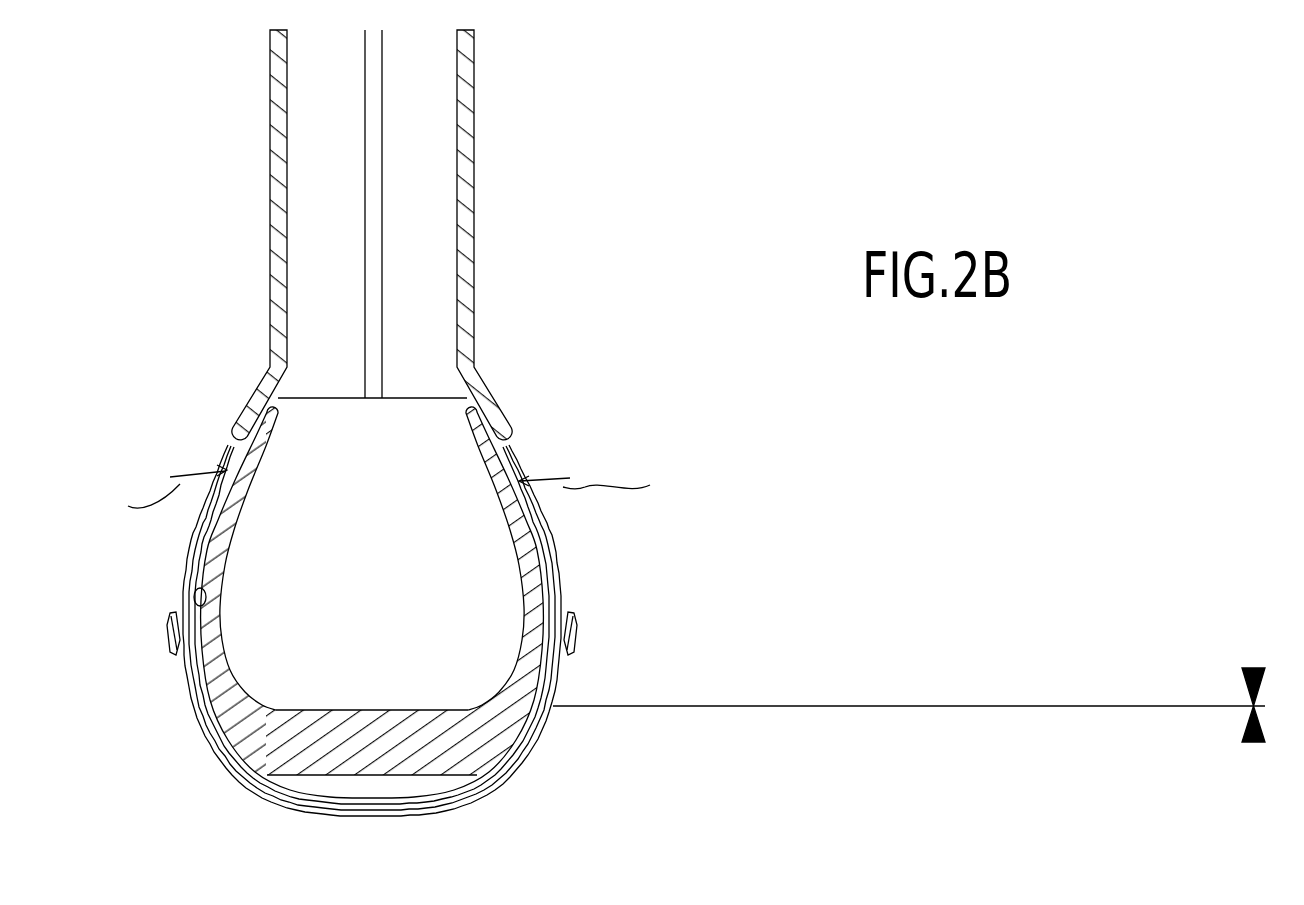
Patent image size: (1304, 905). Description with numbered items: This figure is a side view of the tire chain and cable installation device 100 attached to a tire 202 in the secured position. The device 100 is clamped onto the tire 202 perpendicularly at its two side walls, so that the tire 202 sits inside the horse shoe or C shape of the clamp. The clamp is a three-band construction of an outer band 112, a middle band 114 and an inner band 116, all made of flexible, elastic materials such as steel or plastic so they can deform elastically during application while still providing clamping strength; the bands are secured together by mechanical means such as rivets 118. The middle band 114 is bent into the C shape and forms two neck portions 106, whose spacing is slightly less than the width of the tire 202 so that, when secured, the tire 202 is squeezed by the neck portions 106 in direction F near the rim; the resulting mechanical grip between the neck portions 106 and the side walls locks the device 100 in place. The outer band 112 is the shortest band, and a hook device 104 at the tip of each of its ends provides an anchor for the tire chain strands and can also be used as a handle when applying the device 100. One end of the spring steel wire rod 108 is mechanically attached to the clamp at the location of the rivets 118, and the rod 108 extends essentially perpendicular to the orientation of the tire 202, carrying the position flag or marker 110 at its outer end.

The tire chain and cable installation device 100 is at (957, 411).
The hook device 104 is at (162, 637).
The neck portion 106 is at (228, 446).
The spring steel wire rod 108 is at (1065, 705).
The position flag or marker 110 is at (1253, 668).
The outer band 112 is at (215, 742).
The middle band 114 is at (548, 528).
The inner band 116 is at (184, 588).
The rivets 118 is at (556, 700).
The tire 202 is at (397, 757).